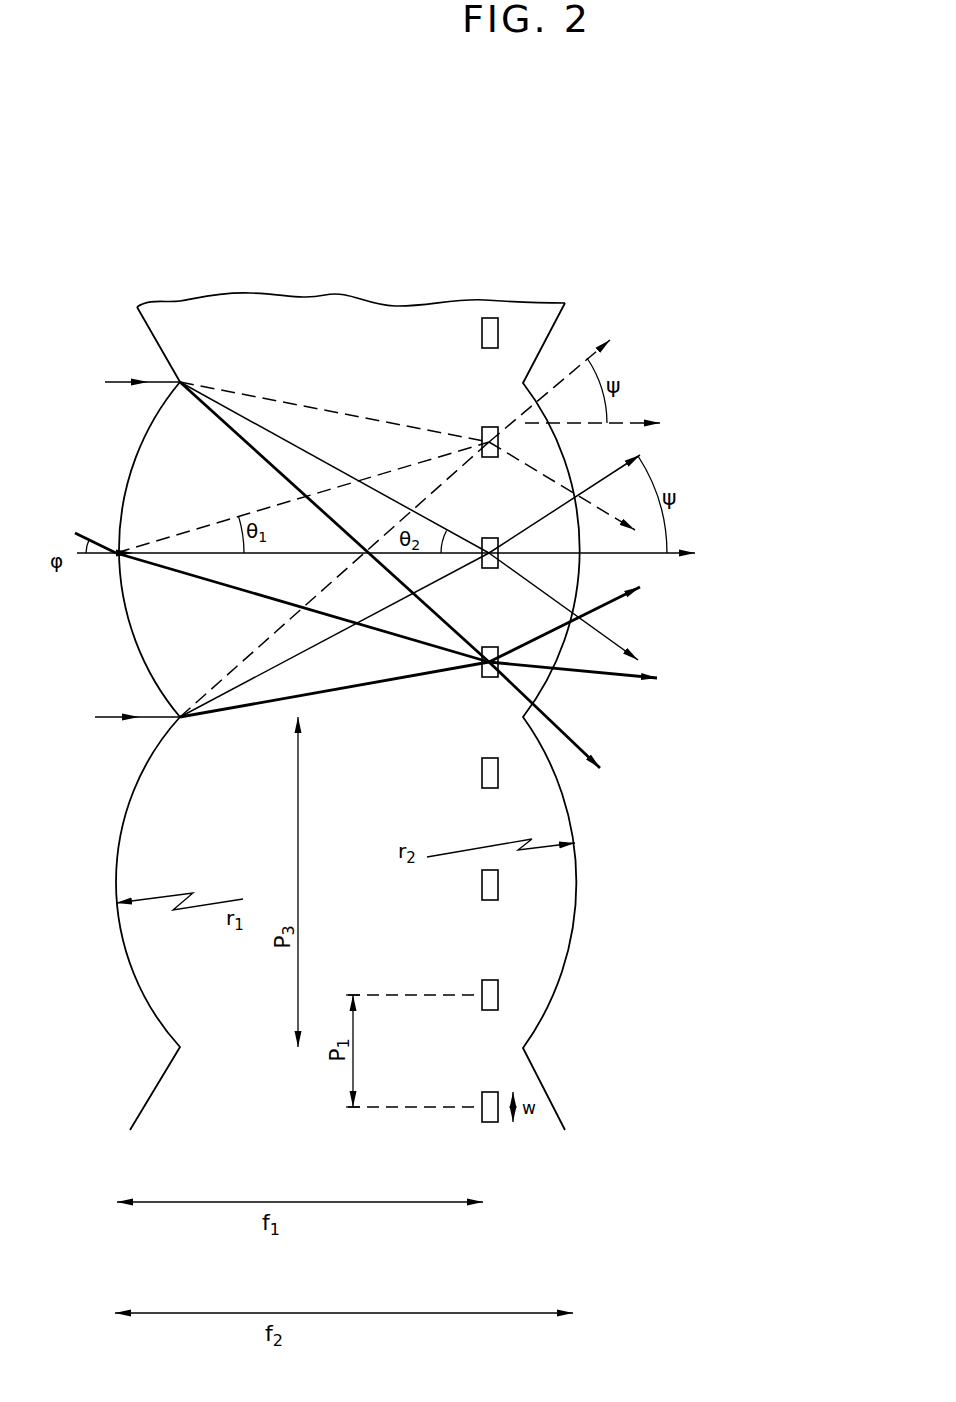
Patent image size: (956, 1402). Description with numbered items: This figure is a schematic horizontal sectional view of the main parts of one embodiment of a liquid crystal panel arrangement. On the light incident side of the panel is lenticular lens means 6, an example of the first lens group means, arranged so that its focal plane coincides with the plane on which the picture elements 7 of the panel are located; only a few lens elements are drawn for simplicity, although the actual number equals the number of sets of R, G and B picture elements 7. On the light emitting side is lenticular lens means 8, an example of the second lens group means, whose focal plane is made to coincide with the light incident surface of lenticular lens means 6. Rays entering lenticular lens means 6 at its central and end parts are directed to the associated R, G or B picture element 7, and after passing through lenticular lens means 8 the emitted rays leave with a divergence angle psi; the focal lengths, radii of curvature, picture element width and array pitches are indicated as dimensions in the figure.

The lenticular lens means 6 is at (138, 987).
The picture elements 7 is at (498, 996).
The lenticular lens means 8 is at (571, 957).